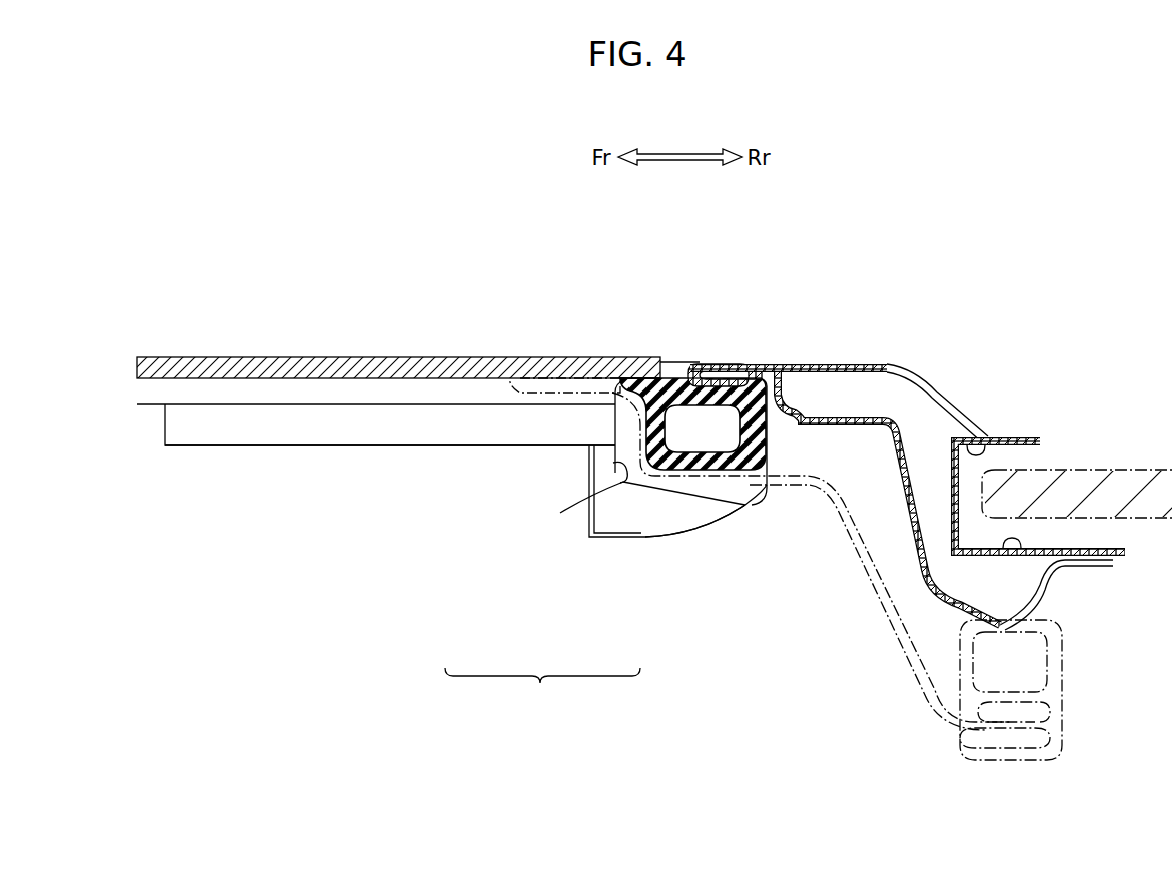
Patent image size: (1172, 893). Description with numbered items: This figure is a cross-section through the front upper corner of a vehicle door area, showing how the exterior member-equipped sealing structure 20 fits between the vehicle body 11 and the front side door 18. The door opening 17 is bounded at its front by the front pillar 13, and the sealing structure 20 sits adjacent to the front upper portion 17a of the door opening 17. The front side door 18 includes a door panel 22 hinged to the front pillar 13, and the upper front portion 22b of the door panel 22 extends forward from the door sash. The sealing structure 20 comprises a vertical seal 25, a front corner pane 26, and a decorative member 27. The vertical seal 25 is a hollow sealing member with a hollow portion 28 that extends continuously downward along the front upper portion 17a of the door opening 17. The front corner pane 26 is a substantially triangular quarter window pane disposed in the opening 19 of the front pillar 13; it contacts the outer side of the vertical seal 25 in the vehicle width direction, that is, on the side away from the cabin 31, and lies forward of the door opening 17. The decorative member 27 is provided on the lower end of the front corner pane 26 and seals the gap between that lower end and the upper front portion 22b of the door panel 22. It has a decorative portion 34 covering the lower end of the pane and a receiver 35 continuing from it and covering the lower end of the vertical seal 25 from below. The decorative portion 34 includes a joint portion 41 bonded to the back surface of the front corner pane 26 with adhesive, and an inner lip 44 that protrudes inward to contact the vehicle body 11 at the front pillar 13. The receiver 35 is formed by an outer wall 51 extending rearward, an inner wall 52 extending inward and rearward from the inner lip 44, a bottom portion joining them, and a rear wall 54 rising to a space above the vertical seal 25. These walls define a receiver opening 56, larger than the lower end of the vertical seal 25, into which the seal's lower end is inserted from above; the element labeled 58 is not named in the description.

The vehicle body 11 is at (895, 245).
The front pillar 13 is at (890, 612).
The door opening 17 is at (719, 482).
The front upper portion of the door opening 17a is at (686, 476).
The front side door 18 is at (958, 397).
The opening of the front pillar 19 is at (522, 382).
The exterior member-equipped sealing structure 20 is at (620, 354).
The door panel 22 is at (890, 365).
The upper front portion of the door panel 22b is at (720, 363).
The vertical seal 25 is at (781, 372).
The front corner pane 26 is at (437, 357).
The decorative member 27 is at (542, 689).
The hollow portion 28 is at (730, 443).
The cabin 31 is at (703, 743).
The decorative portion 34 is at (468, 438).
The receiver 35 is at (657, 536).
The joint portion 41 is at (284, 397).
The inner lip 44 is at (375, 430).
The outer wall 51 is at (668, 362).
The inner wall 52 is at (622, 538).
The rear wall 54 is at (770, 410).
The receiver opening 56 is at (620, 483).
The holder portion 58 is at (745, 493).